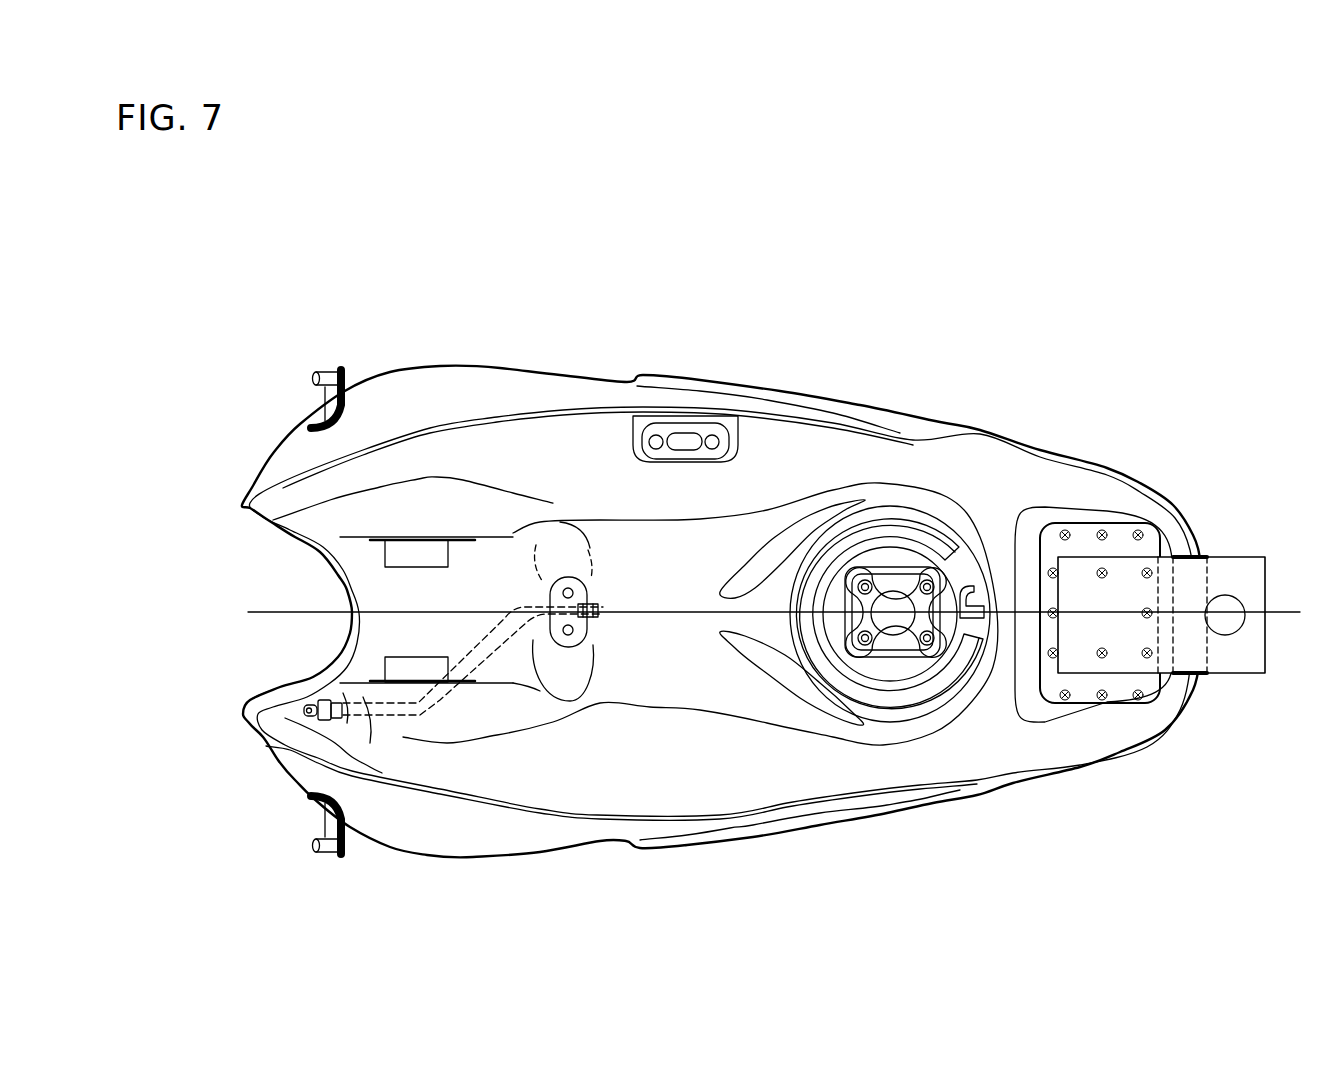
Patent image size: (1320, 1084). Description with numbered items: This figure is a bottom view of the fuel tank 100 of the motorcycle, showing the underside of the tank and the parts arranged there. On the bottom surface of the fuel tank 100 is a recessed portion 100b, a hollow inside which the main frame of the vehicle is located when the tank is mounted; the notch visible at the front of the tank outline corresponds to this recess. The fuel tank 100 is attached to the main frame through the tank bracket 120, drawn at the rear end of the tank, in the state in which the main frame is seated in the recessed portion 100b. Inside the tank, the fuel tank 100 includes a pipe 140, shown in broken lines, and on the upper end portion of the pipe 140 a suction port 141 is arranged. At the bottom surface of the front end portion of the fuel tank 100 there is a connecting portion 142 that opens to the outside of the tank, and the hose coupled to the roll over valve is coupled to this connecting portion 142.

The fuel tank 100 is at (1069, 336).
The recessed portion 100b is at (280, 632).
The tank bracket 120 is at (1247, 567).
The pipe 140 is at (435, 713).
The suction port 141 is at (587, 617).
The connecting portion 142 is at (303, 708).